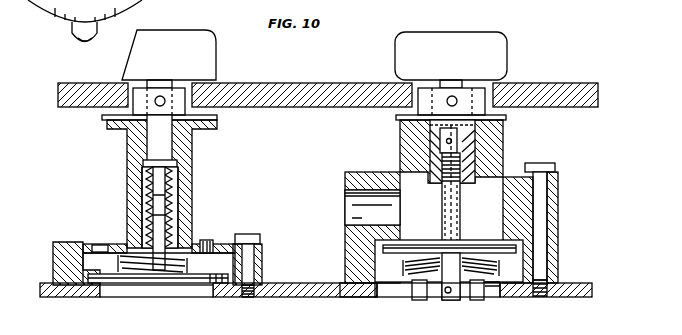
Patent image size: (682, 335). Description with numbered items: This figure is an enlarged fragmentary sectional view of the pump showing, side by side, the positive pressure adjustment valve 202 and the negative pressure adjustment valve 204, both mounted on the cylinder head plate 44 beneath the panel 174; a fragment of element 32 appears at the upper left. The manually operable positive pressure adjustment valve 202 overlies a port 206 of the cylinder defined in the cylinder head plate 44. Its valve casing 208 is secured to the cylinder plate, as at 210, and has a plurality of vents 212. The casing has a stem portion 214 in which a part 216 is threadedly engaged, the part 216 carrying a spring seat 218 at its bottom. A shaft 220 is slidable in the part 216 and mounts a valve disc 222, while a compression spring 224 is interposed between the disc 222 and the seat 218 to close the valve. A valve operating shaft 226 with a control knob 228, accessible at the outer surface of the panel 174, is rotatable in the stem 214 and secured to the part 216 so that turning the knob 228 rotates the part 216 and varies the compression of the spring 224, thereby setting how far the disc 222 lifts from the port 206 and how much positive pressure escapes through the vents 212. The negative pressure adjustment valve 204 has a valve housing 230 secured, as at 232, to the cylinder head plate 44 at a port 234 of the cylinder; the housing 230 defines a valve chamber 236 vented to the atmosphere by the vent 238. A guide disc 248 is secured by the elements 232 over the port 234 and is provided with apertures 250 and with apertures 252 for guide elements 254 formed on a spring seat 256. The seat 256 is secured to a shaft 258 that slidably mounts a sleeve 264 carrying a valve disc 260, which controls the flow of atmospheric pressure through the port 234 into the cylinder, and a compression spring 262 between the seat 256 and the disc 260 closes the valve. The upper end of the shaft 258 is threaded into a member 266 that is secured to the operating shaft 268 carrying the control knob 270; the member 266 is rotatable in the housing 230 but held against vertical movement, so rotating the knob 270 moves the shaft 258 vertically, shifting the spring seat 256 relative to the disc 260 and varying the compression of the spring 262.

The tip of dispensing nozzle 32 is at (72, 30).
The cylinder head plate 44 is at (46, 287).
The panel 174 is at (308, 87).
The positive pressure adjustment valve 202 is at (127, 195).
The negative pressure adjustment valve 204 is at (503, 156).
The port 206 is at (103, 298).
The valve casing 208 is at (53, 250).
The securing element 210 is at (252, 255).
The vents 212 is at (95, 245).
The stem portion 214 is at (185, 160).
The threaded part 216 is at (180, 200).
The spring seat 218 is at (205, 240).
The shaft 220 is at (155, 222).
The valve disc 222 is at (207, 285).
The compression spring 224 is at (125, 267).
The valve operating shaft 226 is at (155, 143).
The control knob 228 is at (201, 42).
The valve housing 230 is at (365, 173).
The securing elements 232 is at (538, 205).
The port 234 is at (390, 295).
The valve chamber 236 is at (497, 172).
The vent 238 is at (348, 205).
The guide disc 248 is at (365, 286).
The apertures 250 is at (418, 300).
The apertures 252 is at (488, 290).
The guide elements 254 is at (478, 300).
The spring seat 256 is at (486, 275).
The shaft 258 is at (447, 296).
The valve disc 260 is at (414, 247).
The compression spring 262 is at (416, 265).
The sleeve 264 is at (462, 205).
The threaded member 266 is at (437, 145).
The operating shaft 268 is at (468, 87).
The control knob 270 is at (484, 40).